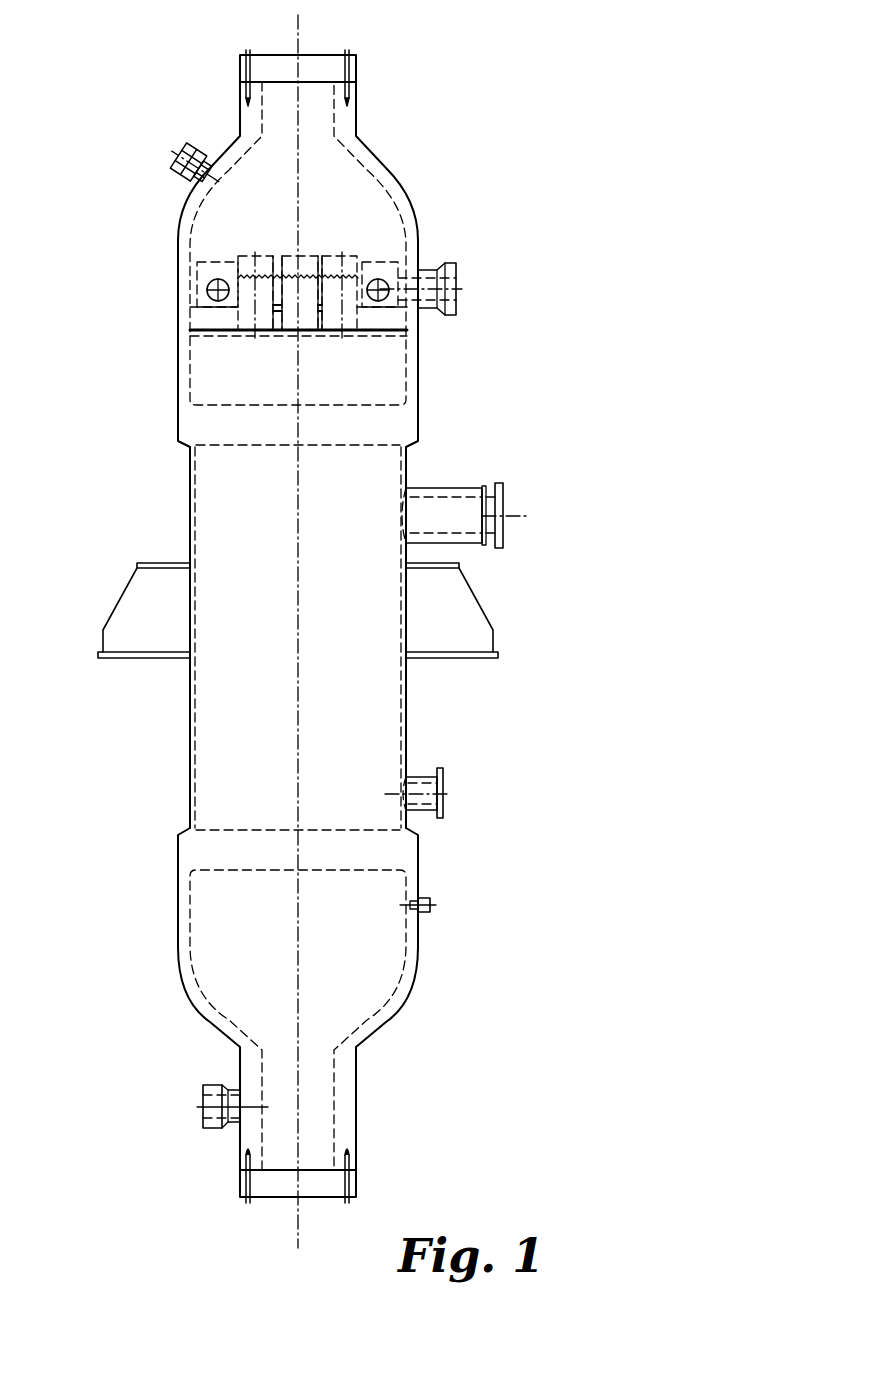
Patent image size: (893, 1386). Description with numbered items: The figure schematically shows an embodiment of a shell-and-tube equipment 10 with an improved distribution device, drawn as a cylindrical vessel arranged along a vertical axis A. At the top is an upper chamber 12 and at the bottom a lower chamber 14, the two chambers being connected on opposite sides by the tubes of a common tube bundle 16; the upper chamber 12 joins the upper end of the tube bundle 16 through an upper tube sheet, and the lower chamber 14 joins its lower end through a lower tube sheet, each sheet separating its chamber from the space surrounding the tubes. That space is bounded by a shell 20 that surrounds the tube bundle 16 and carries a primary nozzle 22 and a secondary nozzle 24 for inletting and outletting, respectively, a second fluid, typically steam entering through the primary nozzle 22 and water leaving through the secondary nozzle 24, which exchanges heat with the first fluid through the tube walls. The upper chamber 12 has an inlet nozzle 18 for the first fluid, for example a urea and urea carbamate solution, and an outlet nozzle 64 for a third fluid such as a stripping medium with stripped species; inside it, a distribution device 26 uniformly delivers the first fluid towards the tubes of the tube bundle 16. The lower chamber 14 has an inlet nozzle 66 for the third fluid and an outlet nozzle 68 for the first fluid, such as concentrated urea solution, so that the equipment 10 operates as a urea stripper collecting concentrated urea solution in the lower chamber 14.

The shell-and-tube equipment 10 is at (308, 626).
The upper chamber 12 is at (392, 160).
The lower chamber 14 is at (388, 1020).
The tube bundle 16 is at (304, 637).
The inlet nozzle 18 is at (457, 272).
The shell 20 is at (406, 731).
The primary nozzle 22 is at (433, 488).
The secondary nozzle 24 is at (420, 812).
The distribution device 26 is at (214, 252).
The outlet nozzle 64 is at (172, 146).
The inlet nozzle 66 is at (423, 913).
The outlet nozzle 68 is at (201, 1100).
The vertical axis A is at (296, 1225).